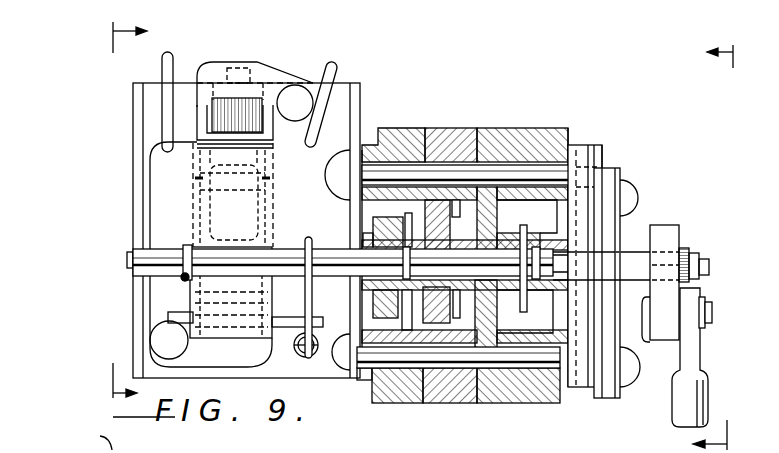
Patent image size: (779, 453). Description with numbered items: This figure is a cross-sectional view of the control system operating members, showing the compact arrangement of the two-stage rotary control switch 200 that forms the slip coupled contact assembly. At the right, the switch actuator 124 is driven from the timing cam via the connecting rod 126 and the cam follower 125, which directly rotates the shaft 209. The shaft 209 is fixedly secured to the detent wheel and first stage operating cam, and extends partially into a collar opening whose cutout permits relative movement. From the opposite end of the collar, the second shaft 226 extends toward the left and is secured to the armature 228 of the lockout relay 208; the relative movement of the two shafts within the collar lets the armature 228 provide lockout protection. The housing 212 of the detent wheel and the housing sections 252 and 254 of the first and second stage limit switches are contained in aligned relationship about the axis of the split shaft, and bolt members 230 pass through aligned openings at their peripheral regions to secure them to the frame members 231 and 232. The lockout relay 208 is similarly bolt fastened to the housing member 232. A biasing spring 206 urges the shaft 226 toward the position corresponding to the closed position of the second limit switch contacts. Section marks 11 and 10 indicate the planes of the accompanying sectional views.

The two-stage rotary control switch 200 is at (504, 54).
The housing member 232 is at (362, 90).
The armature 228 is at (193, 200).
The biasing spring 206 is at (300, 352).
The second shaft 226 is at (338, 272).
The housing section 254 is at (395, 133).
The housing section 252 is at (450, 130).
The housing 212 is at (510, 133).
The bolt members 230 is at (537, 170).
The frame member 231 is at (615, 172).
The shaft 209 is at (500, 284).
The lockout relay 208 is at (463, 410).
The switch actuator 124 is at (670, 228).
The cam follower 125 is at (670, 415).
The connecting rod 126 is at (693, 325).
The section line 11 is at (140, 213).
The section line 10 is at (702, 249).